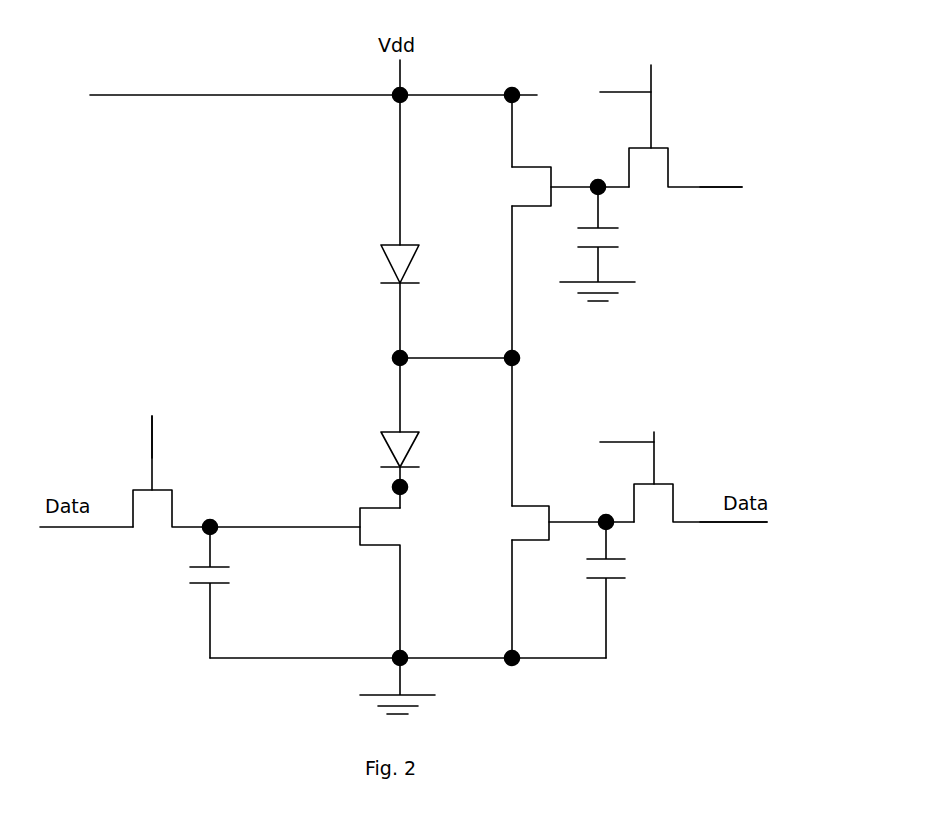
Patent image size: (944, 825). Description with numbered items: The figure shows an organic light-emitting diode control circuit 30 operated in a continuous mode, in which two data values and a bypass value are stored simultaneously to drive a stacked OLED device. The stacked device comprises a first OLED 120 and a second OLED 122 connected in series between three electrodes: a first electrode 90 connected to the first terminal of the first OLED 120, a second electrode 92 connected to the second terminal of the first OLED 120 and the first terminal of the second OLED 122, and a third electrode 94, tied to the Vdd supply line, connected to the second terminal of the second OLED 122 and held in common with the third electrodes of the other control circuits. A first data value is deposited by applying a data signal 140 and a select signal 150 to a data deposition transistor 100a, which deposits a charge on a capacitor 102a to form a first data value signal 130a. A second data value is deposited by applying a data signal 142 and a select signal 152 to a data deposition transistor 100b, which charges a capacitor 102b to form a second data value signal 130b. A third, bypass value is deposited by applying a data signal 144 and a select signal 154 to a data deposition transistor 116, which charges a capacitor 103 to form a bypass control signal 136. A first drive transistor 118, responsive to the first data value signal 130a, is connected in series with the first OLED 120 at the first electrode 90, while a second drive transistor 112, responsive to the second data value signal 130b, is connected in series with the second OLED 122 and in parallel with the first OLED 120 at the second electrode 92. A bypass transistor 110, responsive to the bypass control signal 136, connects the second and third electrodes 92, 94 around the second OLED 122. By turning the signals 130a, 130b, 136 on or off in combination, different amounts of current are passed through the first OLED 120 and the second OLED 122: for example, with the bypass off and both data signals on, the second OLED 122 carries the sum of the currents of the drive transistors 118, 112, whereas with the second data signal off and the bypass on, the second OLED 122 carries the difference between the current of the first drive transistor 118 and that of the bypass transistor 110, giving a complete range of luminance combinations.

The organic light-emitting diode control circuit 30 is at (268, 338).
The first electrode 90 is at (408, 490).
The second electrode 92 is at (408, 362).
The third electrode 94 is at (408, 100).
The data deposition transistor 100a is at (166, 476).
The data deposition transistor 100b is at (668, 482).
The capacitor 102a is at (195, 585).
The capacitor 102b is at (612, 581).
The capacitor 103 is at (609, 248).
The bypass transistor 110 is at (528, 166).
The second drive transistor 112 is at (522, 505).
The data deposition transistor 116 is at (660, 146).
The first drive transistor 118 is at (378, 548).
The first OLED 120 is at (412, 440).
The second OLED 122 is at (410, 258).
The first data value signal 130a is at (307, 528).
The second data value signal 130b is at (572, 523).
The bypass control signal 136 is at (568, 188).
The data signal 140 is at (100, 528).
The data signal 142 is at (720, 523).
The data signal 144 is at (722, 188).
The select signal 150 is at (150, 458).
The select signal 152 is at (600, 442).
The select signal 154 is at (600, 92).